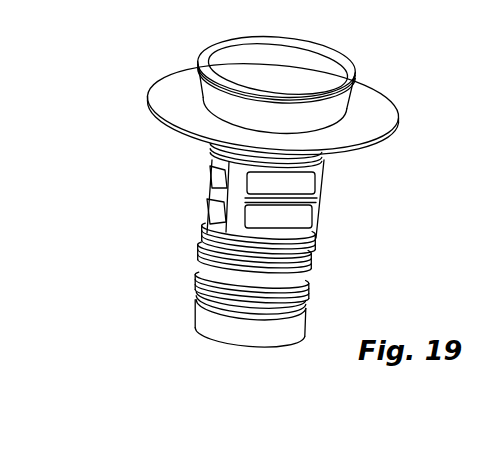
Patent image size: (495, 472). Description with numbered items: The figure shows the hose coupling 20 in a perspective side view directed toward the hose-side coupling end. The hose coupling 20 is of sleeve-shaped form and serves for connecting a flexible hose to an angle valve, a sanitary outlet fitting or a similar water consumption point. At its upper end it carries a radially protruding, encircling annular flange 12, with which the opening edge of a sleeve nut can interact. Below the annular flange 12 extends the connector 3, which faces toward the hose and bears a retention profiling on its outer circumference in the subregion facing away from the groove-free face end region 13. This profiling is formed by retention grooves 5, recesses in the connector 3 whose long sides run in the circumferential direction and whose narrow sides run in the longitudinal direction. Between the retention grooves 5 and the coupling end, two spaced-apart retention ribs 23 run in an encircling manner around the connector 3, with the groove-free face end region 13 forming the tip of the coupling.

The connector 3 is at (135, 228).
The annular flange 12 is at (385, 107).
The retention groove 5 is at (210, 166).
The hose coupling 20 is at (438, 171).
The retention rib 23 is at (333, 266).
The groove-free face end region 13 is at (293, 336).